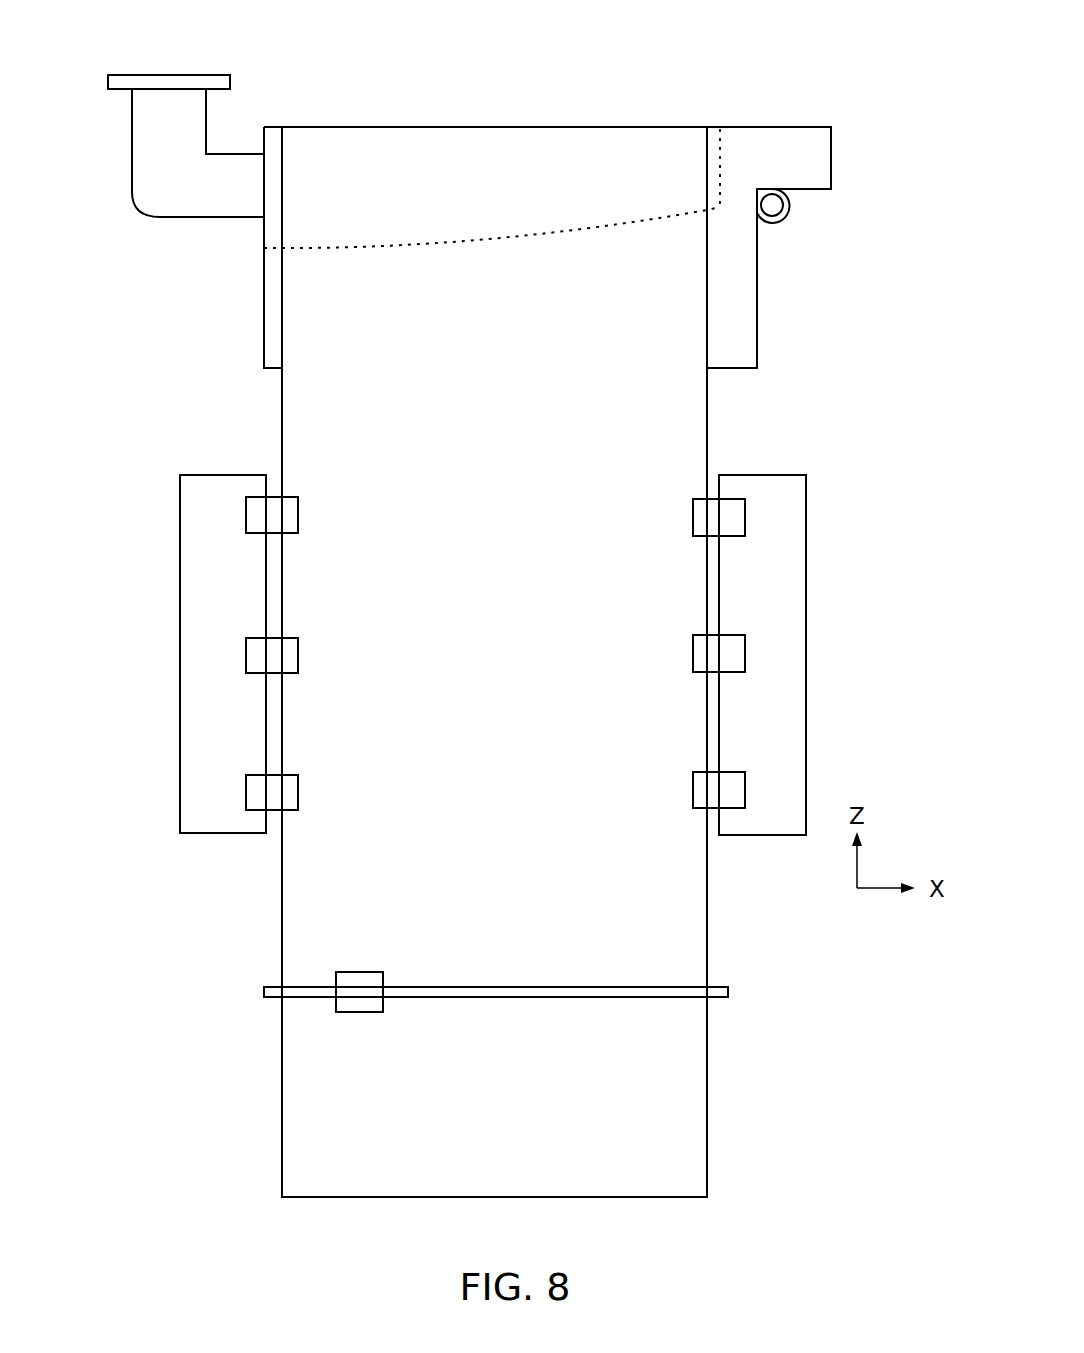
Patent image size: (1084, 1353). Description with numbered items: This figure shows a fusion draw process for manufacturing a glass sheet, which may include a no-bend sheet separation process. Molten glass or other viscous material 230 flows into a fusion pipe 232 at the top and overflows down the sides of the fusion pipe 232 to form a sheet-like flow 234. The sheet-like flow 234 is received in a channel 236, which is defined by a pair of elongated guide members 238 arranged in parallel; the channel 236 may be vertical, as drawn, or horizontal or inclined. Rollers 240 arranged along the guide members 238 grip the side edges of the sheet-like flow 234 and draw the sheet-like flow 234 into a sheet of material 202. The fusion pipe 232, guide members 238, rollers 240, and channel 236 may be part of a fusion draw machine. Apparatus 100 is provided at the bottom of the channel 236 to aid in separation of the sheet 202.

The apparatus 100 is at (335, 1000).
The sheet of material 202 is at (708, 1112).
The molten glass or other viscous material 230 is at (167, 75).
The fusion pipe 232 is at (750, 128).
The sheet-like flow 234 is at (707, 437).
The channel 236 is at (268, 495).
The elongated guide members 238 is at (192, 472).
The rollers 240 is at (255, 793).